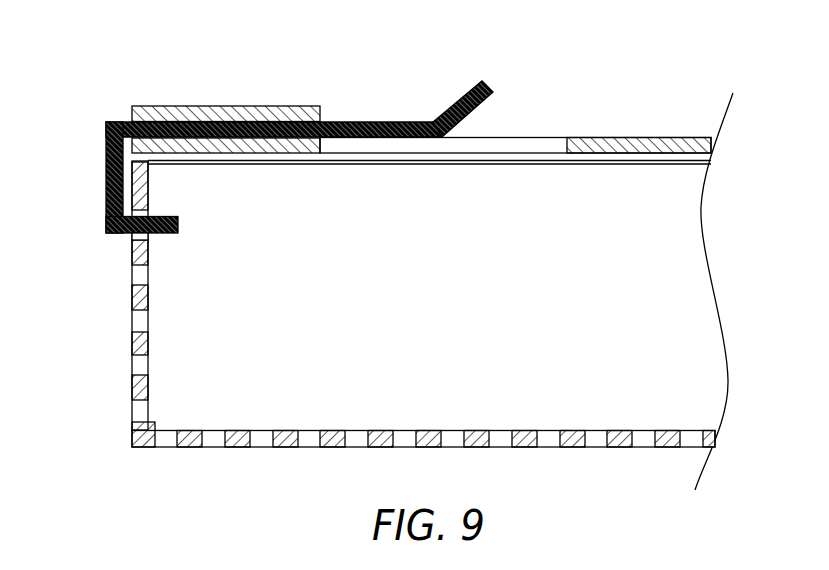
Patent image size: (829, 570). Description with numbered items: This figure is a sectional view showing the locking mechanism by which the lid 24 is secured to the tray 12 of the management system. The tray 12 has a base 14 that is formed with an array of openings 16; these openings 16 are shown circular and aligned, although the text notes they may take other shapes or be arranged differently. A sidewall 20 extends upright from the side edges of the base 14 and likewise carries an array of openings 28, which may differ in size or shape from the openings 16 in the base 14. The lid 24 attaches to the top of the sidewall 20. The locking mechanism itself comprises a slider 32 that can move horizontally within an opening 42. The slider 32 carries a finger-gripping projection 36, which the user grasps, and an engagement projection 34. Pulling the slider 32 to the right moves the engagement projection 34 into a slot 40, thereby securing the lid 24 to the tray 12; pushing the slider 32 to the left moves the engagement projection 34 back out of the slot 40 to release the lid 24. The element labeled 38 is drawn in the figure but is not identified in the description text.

The tray 12 is at (131, 437).
The base 14 is at (478, 448).
The openings 16 is at (263, 448).
The sidewall 20 is at (132, 390).
The lid 24 is at (650, 137).
The openings 28 is at (140, 322).
The slider 32 is at (352, 122).
The engagement projection 34 is at (118, 234).
The finger-gripping projection 36 is at (487, 85).
The cover plate 38 is at (175, 106).
The slot 40 is at (150, 234).
The opening 42 is at (120, 120).